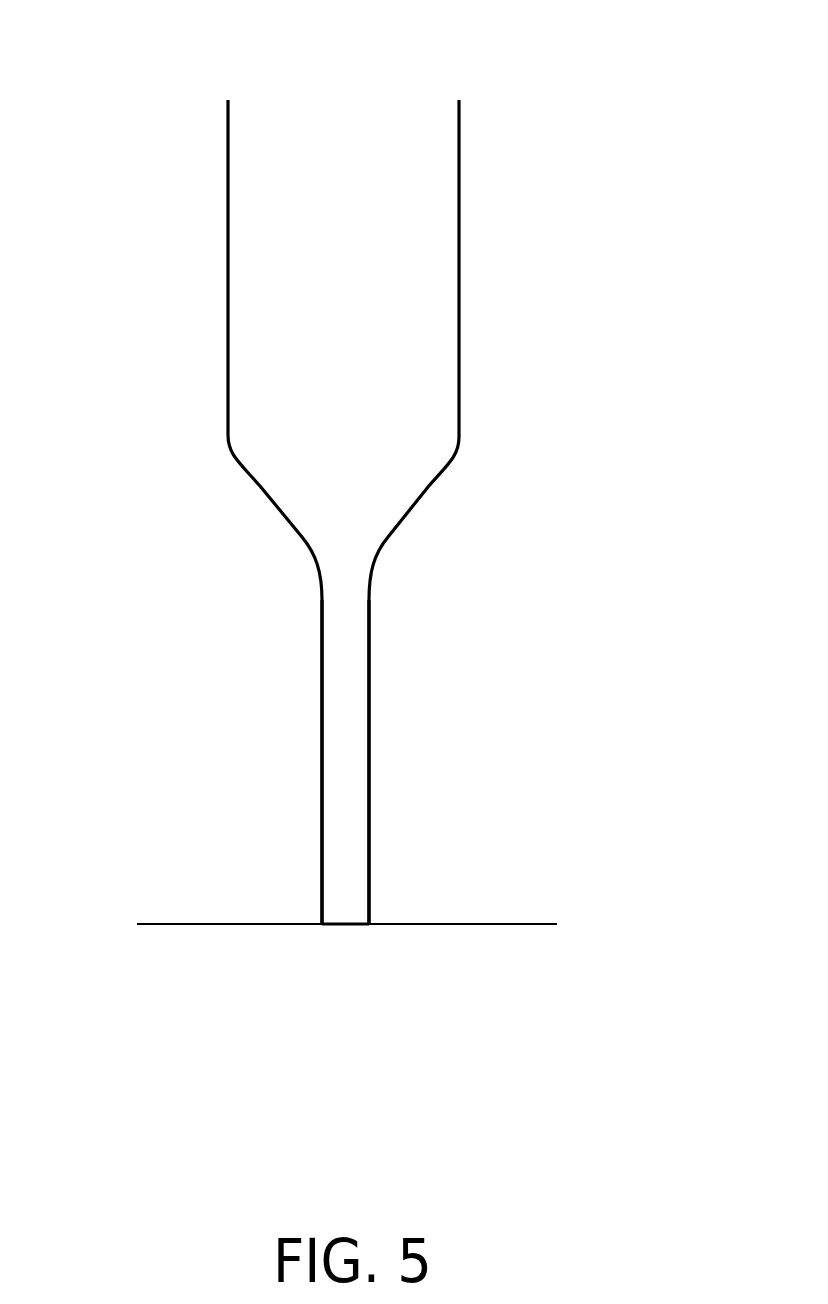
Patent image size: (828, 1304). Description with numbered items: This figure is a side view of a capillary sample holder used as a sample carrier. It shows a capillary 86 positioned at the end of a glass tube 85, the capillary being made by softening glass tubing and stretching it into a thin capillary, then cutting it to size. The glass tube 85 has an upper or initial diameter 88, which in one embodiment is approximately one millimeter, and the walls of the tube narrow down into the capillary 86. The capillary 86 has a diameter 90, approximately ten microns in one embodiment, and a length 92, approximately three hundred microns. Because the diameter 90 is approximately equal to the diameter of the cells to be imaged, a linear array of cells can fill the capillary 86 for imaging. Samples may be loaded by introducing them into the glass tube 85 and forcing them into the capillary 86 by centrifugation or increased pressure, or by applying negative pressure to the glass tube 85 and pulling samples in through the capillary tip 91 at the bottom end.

The glass tube 85 is at (460, 262).
The capillary 86 is at (370, 720).
The upper diameter 88 is at (459, 58).
The capillary diameter 90 is at (322, 924).
The capillary tip 91 is at (347, 927).
The length 92 is at (237, 588).